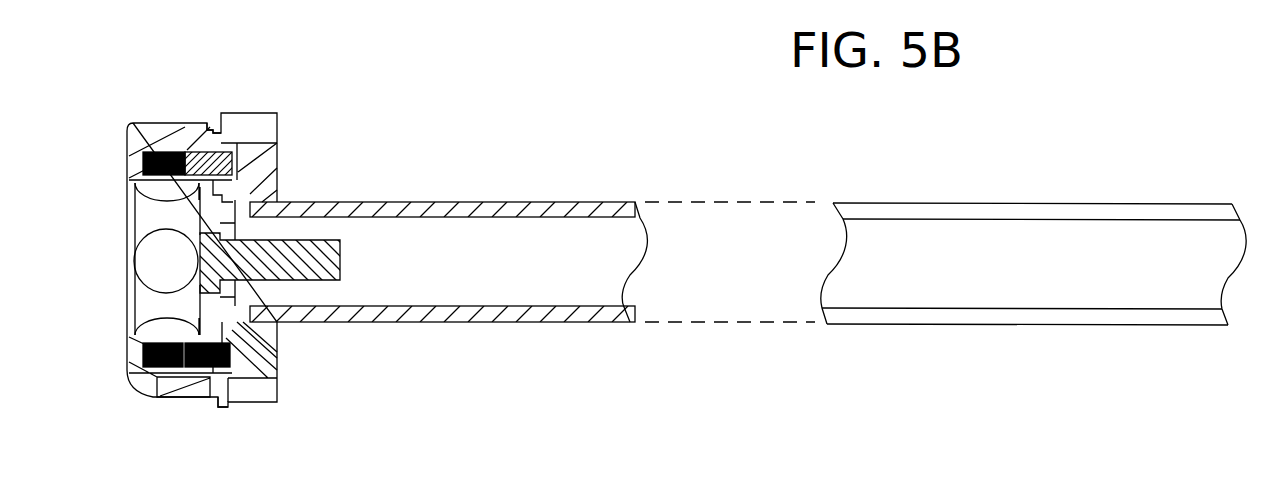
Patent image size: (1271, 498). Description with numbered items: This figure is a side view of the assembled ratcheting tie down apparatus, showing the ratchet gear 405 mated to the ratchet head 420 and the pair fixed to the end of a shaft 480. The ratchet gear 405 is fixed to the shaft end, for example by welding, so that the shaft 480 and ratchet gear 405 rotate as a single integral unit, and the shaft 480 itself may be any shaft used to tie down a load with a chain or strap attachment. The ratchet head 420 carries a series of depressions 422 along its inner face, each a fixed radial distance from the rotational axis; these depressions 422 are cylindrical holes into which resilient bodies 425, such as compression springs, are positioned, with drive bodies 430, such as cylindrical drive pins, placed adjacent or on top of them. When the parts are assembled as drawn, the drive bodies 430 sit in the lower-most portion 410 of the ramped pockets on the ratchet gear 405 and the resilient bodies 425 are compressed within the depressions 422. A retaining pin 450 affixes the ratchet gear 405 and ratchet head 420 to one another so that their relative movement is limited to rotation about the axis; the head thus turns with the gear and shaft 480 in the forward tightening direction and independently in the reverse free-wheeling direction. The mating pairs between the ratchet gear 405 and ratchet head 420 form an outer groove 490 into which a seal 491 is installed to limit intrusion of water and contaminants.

The ratchet gear 405 is at (283, 138).
The lower-most portion 410 is at (226, 148).
The ratchet head 420 is at (133, 266).
The depressions 422 is at (131, 128).
The resilient bodies 425 is at (170, 150).
The drive bodies 430 is at (213, 128).
The retaining pin 450 is at (330, 240).
The shaft 480 is at (517, 240).
The outer groove 490 is at (258, 338).
The seal 491 is at (268, 345).